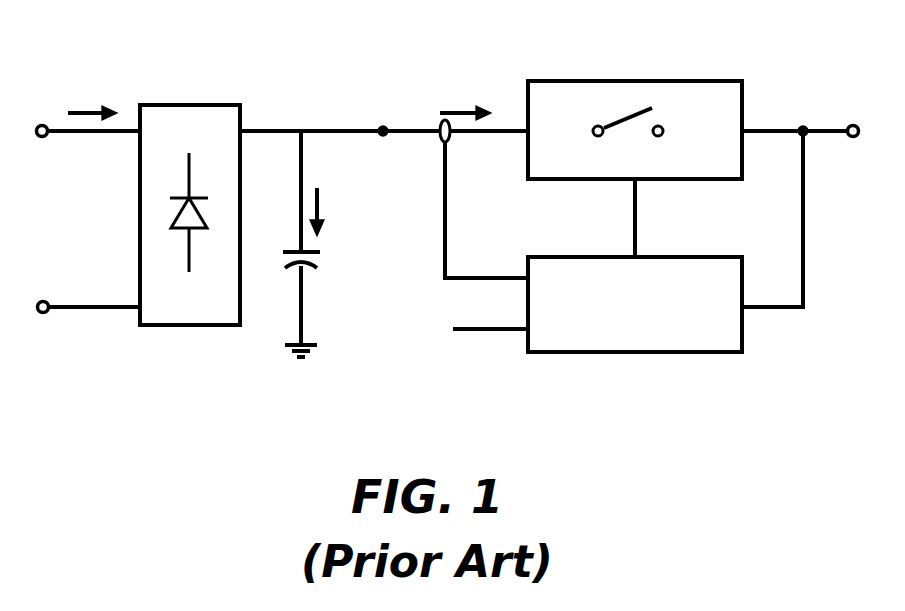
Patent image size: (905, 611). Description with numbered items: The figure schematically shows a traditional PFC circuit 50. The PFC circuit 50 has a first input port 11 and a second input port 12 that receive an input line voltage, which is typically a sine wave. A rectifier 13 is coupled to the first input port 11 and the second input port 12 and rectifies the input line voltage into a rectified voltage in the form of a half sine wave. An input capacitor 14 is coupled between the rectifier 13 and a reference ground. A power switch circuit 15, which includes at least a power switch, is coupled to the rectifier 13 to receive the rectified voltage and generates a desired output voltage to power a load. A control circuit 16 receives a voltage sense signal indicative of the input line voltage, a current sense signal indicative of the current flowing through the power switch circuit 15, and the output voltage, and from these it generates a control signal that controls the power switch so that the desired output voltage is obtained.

The PFC circuit 50 is at (95, 45).
The first input port 11 is at (45, 141).
The second input port 12 is at (50, 298).
The rectifier 13 is at (212, 327).
The input capacitor 14 is at (317, 277).
The power switch circuit 15 is at (700, 188).
The control circuit 16 is at (635, 304).